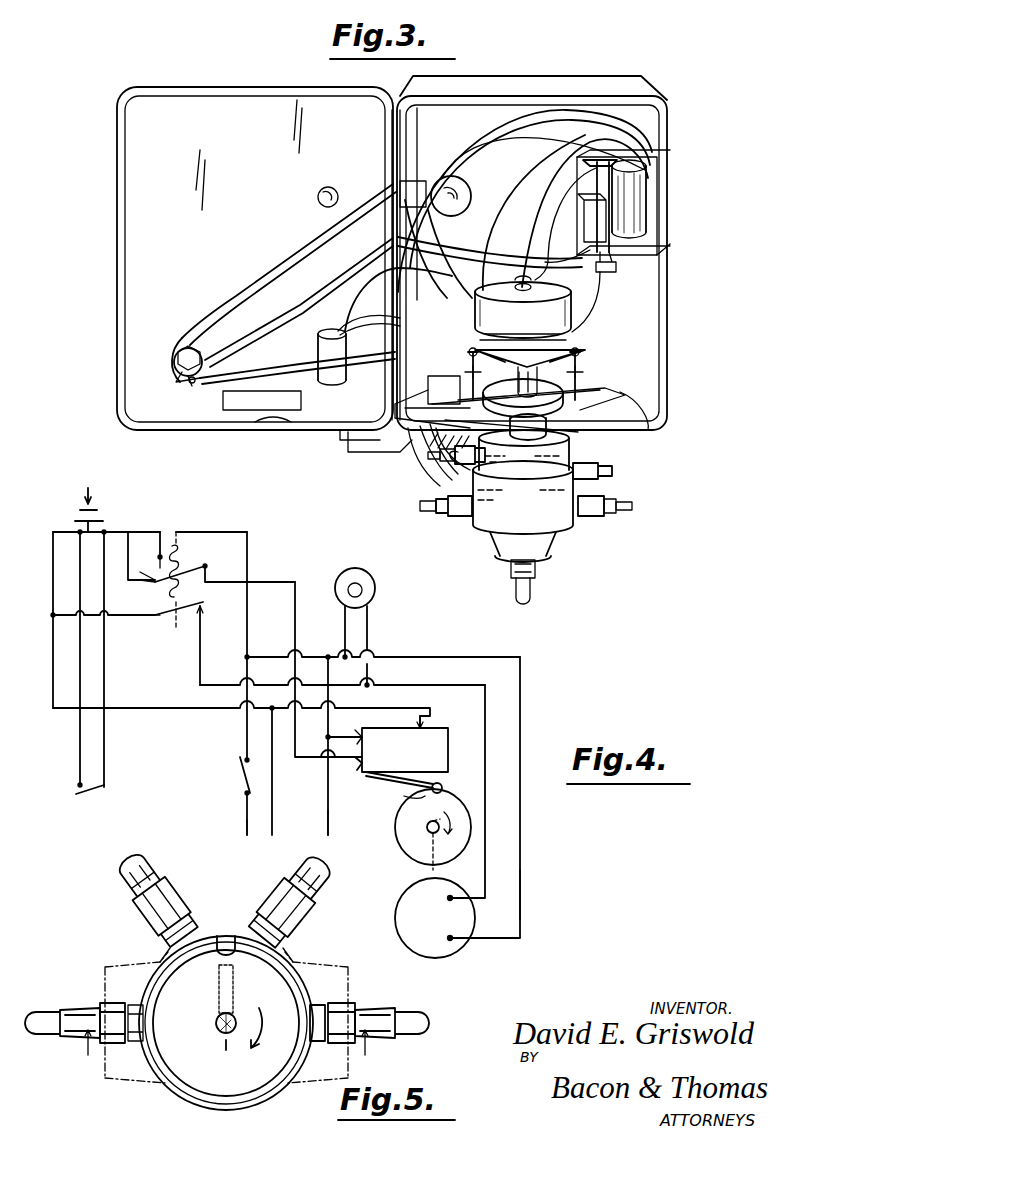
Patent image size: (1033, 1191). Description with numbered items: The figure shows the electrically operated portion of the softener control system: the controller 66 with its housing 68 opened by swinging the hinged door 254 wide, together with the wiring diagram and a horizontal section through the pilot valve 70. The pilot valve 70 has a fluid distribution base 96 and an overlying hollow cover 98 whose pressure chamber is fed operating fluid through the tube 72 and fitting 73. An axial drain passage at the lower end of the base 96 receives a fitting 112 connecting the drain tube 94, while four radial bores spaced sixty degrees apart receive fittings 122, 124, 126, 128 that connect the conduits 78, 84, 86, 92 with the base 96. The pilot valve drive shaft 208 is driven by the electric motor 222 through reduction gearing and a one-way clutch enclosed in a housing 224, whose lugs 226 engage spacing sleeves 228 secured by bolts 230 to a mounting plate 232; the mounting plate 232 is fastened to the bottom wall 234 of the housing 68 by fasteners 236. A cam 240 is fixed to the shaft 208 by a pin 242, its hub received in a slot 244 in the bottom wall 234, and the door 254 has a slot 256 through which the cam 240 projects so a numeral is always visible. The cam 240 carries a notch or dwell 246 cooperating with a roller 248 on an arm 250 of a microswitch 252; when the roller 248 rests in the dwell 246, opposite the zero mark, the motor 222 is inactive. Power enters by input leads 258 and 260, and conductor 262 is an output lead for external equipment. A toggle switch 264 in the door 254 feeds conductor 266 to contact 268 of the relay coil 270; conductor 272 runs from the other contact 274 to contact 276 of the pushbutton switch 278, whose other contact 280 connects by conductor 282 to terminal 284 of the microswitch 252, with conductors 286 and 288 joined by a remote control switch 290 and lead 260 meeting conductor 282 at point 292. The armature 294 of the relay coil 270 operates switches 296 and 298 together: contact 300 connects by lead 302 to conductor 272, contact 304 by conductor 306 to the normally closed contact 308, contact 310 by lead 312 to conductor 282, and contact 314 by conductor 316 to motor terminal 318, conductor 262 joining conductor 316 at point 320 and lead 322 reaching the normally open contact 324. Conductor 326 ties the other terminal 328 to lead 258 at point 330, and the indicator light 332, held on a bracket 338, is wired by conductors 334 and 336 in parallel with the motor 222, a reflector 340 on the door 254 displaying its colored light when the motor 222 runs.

In FIG. 3, the controller 66 is at (675, 90).
In FIG. 3, the housing 68 is at (664, 222).
In FIG. 3, the pilot valve 70 is at (615, 498).
In FIG. 3, the tube 72 is at (430, 462).
In FIG. 5, the tube 72 is at (92, 1008).
In FIG. 3, the fitting 73 is at (445, 465).
In FIG. 5, the fitting 73 is at (94, 1060).
In FIG. 3, the conduit 78 is at (428, 512).
In FIG. 5, the conduit 78 is at (50, 1040).
In FIG. 3, the conduit 84 is at (470, 470).
In FIG. 5, the conduit 84 is at (140, 872).
In FIG. 3, the conduit 86 is at (612, 472).
In FIG. 5, the conduit 86 is at (312, 874).
In FIG. 3, the conduit 92 is at (628, 512).
In FIG. 5, the conduit 92 is at (392, 1012).
In FIG. 3, the drain tube 94 is at (534, 598).
In FIG. 3, the fluid distribution base 96 is at (548, 540).
In FIG. 5, the fluid distribution base 96 is at (194, 1108).
In FIG. 3, the cover 98 is at (560, 466).
In FIG. 3, the fitting 112 is at (537, 573).
In FIG. 3, the fitting 122 is at (458, 518).
In FIG. 5, the fitting 124 is at (182, 924).
In FIG. 5, the fitting 126 is at (306, 926).
In FIG. 3, the fitting 128 is at (594, 518).
In FIG. 5, the fitting 128 is at (352, 1004).
In FIG. 3, the pilot valve drive shaft 208 is at (615, 436).
In FIG. 4, the pilot valve drive shaft 208 is at (425, 866).
In FIG. 5, the pilot valve drive shaft 208 is at (235, 1024).
In FIG. 3, the electric motor 222 is at (523, 307).
In FIG. 4, the electric motor 222 is at (455, 946).
In FIG. 3, the housing 224 is at (580, 326).
In FIG. 3, the lugs 226 is at (580, 356).
In FIG. 3, the spacing sleeves 228 is at (585, 372).
In FIG. 3, the bolts 230 is at (594, 328).
In FIG. 3, the mounting plate 232 is at (558, 430).
In FIG. 3, the bottom wall 234 is at (642, 422).
In FIG. 3, the fasteners 236 is at (440, 396).
In FIG. 3, the cam 240 is at (479, 402).
In FIG. 4, the cam 240 is at (402, 830).
In FIG. 5, the cam 240 is at (208, 928).
In FIG. 5, the pin 242 is at (216, 996).
In FIG. 3, the slot 244 is at (437, 412).
In FIG. 4, the notch or dwell 246 is at (443, 792).
In FIG. 5, the notch or dwell 246 is at (228, 936).
In FIG. 4, the roller 248 is at (410, 800).
In FIG. 4, the arm 250 is at (406, 780).
In FIG. 4, the microswitch 252 is at (424, 710).
In FIG. 3, the door 254 is at (132, 212).
In FIG. 3, the slot 256 is at (223, 402).
In FIG. 3, the power input lead 258 is at (346, 288).
In FIG. 4, the power input lead 258 is at (246, 810).
In FIG. 3, the power input lead 260 is at (385, 452).
In FIG. 4, the power input lead 260 is at (272, 808).
In FIG. 3, the conductor 262 is at (384, 460).
In FIG. 4, the conductor 262 is at (326, 824).
In FIG. 3, the toggle switch 264 is at (318, 374).
In FIG. 4, the toggle switch 264 is at (238, 768).
In FIG. 3, the conductor 266 is at (336, 324).
In FIG. 4, the conductor 266 is at (244, 740).
In FIG. 3, the contact 268 is at (658, 142).
In FIG. 4, the contact 268 is at (186, 532).
In FIG. 3, the relay coil 270 is at (648, 188).
In FIG. 4, the relay coil 270 is at (182, 546).
In FIG. 3, the conductor 272 is at (206, 316).
In FIG. 4, the conductor 272 is at (148, 532).
In FIG. 3, the contact 274 is at (662, 154).
In FIG. 4, the contact 274 is at (148, 548).
In FIG. 3, the contact 276 is at (178, 380).
In FIG. 4, the contact 276 is at (104, 516).
In FIG. 3, the pushbutton switch 278 is at (178, 344).
In FIG. 4, the pushbutton switch 278 is at (80, 498).
In FIG. 3, the contact 280 is at (204, 388).
In FIG. 4, the contact 280 is at (78, 532).
In FIG. 3, the conductor 282 is at (242, 366).
In FIG. 4, the conductor 282 is at (50, 566).
In FIG. 4, the terminal 284 is at (440, 728).
In FIG. 3, the conductor 286 is at (430, 460).
In FIG. 4, the conductor 286 is at (110, 748).
In FIG. 3, the conductor 288 is at (481, 458).
In FIG. 4, the conductor 288 is at (80, 756).
In FIG. 4, the remote control switch 290 is at (90, 794).
In FIG. 4, the point 292 is at (270, 708).
In FIG. 4, the armature 294 is at (170, 522).
In FIG. 4, the switch 296 is at (202, 566).
In FIG. 4, the switch 298 is at (156, 618).
In FIG. 3, the contact 300 is at (546, 254).
In FIG. 4, the contact 300 is at (155, 586).
In FIG. 3, the lead 302 is at (566, 205).
In FIG. 4, the lead 302 is at (122, 568).
In FIG. 3, the contact 304 is at (528, 240).
In FIG. 4, the contact 304 is at (200, 578).
In FIG. 3, the conductor 306 is at (452, 292).
In FIG. 4, the conductor 306 is at (290, 582).
In FIG. 4, the normally closed contact 308 is at (350, 770).
In FIG. 3, the contact 310 is at (598, 302).
In FIG. 4, the contact 310 is at (141, 633).
In FIG. 4, the lead 312 is at (124, 616).
In FIG. 3, the contact 314 is at (610, 269).
In FIG. 4, the contact 314 is at (204, 610).
In FIG. 4, the conductor 316 is at (196, 666).
In FIG. 4, the terminal 318 is at (450, 898).
In FIG. 4, the point 320 is at (312, 680).
In FIG. 4, the lead 322 is at (356, 724).
In FIG. 4, the normally open contact 324 is at (374, 724).
In FIG. 4, the conductor 326 is at (526, 894).
In FIG. 4, the terminal 328 is at (450, 938).
In FIG. 4, the point 330 is at (246, 656).
In FIG. 3, the indicator light 332 is at (466, 170).
In FIG. 4, the indicator light 332 is at (375, 582).
In FIG. 4, the conductor 334 is at (342, 640).
In FIG. 4, the conductor 336 is at (370, 628).
In FIG. 3, the bracket 338 is at (378, 204).
In FIG. 3, the reflector 340 is at (320, 199).